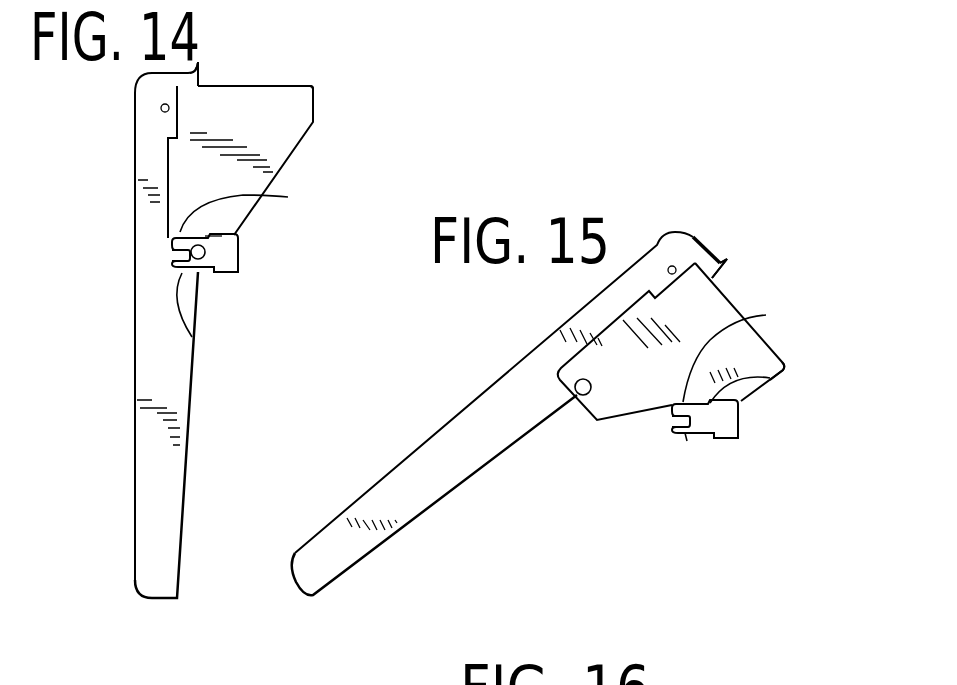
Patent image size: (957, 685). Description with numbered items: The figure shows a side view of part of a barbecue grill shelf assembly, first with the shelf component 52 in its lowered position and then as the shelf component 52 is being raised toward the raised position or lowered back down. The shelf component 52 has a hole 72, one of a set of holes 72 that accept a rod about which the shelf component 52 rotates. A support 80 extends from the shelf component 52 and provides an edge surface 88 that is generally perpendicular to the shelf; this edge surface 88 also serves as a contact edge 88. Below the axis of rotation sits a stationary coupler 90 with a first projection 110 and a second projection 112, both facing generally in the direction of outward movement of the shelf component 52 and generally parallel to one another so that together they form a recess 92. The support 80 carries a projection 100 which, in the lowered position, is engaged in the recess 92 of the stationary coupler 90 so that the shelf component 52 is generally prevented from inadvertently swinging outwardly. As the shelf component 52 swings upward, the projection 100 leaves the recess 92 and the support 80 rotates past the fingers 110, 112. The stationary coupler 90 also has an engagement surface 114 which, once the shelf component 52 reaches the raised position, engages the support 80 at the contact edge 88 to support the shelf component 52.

In FIG. 14, the shelf component 52 is at (150, 521).
In FIG. 15, the shelf component 52 is at (418, 507).
In FIG. 14, the holes 72 is at (162, 104).
In FIG. 15, the holes 72 is at (675, 266).
In FIG. 14, the support 80 is at (250, 108).
In FIG. 15, the support 80 is at (715, 300).
In FIG. 14, the edge surface 88 is at (297, 86).
In FIG. 15, the edge surface 88 is at (772, 348).
In FIG. 14, the stationary coupler 90 is at (223, 258).
In FIG. 15, the stationary coupler 90 is at (740, 427).
In FIG. 14, the recess 92 is at (168, 253).
In FIG. 15, the recess 92 is at (670, 418).
In FIG. 14, the projection 100 is at (199, 260).
In FIG. 15, the projection 100 is at (580, 396).
In FIG. 14, the first projection 110 is at (192, 337).
In FIG. 15, the first projection 110 is at (687, 433).
In FIG. 14, the second projection 112 is at (250, 206).
In FIG. 15, the second projection 112 is at (741, 351).
In FIG. 14, the engagement surface 114 is at (212, 230).
In FIG. 15, the engagement surface 114 is at (770, 383).